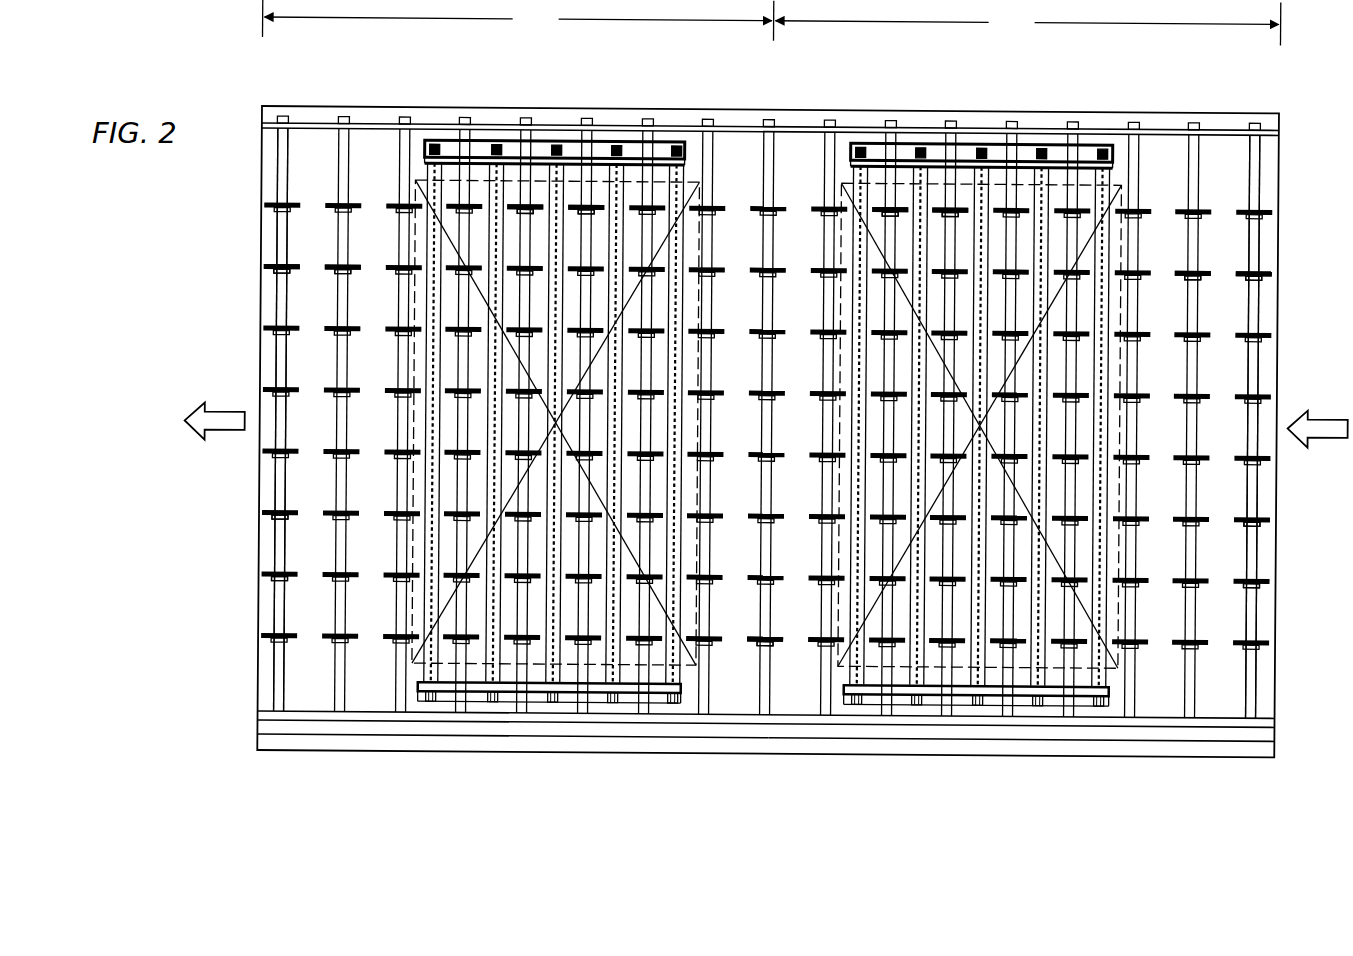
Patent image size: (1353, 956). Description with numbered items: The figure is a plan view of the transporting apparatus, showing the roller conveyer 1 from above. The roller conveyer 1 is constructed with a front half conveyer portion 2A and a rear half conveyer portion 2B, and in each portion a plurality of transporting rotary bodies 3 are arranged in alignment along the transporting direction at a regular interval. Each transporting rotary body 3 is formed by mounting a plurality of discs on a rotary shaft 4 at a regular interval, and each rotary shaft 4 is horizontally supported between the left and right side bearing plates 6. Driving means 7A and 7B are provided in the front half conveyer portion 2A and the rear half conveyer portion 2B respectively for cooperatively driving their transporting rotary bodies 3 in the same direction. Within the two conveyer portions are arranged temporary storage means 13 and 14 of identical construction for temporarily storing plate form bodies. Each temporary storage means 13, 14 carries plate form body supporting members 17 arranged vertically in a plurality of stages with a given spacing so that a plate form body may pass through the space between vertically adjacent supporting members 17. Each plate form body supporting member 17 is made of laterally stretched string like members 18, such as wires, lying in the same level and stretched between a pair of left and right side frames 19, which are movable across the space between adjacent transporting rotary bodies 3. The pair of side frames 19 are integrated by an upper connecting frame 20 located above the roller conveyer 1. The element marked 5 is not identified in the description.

The roller conveyer 1 is at (1286, 178).
The front half conveyer portion 2A is at (1027, 22).
The rear half conveyer portion 2B is at (518, 20).
The transporting rotary body 3 is at (324, 316).
The rotary shaft 4 is at (283, 482).
The roller collar 5 is at (266, 578).
The side bearing plate 6 is at (790, 128).
The driving means 7A is at (1172, 748).
The driving means 7B is at (372, 737).
The temporary storage means 13 is at (1122, 165).
The temporary storage means 14 is at (418, 165).
The plate form body supporting member 17 is at (425, 548).
The string like member 18 is at (496, 370).
The side frame 19 is at (660, 150).
The upper connecting frame 20 is at (497, 163).